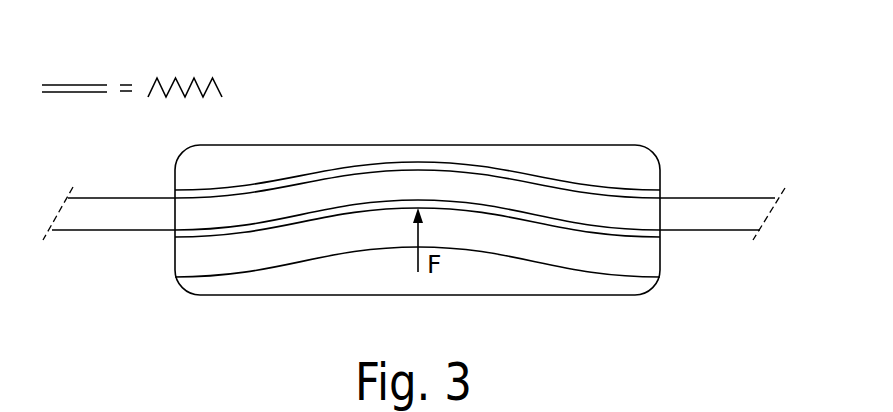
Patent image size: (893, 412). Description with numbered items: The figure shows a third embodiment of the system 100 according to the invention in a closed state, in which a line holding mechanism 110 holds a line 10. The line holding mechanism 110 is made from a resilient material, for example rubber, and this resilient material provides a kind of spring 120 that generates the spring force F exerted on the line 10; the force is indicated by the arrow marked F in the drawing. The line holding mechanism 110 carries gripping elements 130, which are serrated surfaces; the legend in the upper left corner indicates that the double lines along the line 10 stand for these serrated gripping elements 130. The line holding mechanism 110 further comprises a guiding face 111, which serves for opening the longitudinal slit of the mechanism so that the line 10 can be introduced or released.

The line 10 is at (715, 197).
The actuator device 100 is at (658, 76).
The line holding mechanism 110 is at (497, 145).
The guiding face 111 is at (330, 258).
The spring 120 is at (250, 283).
The gripping elements 130 is at (176, 79).